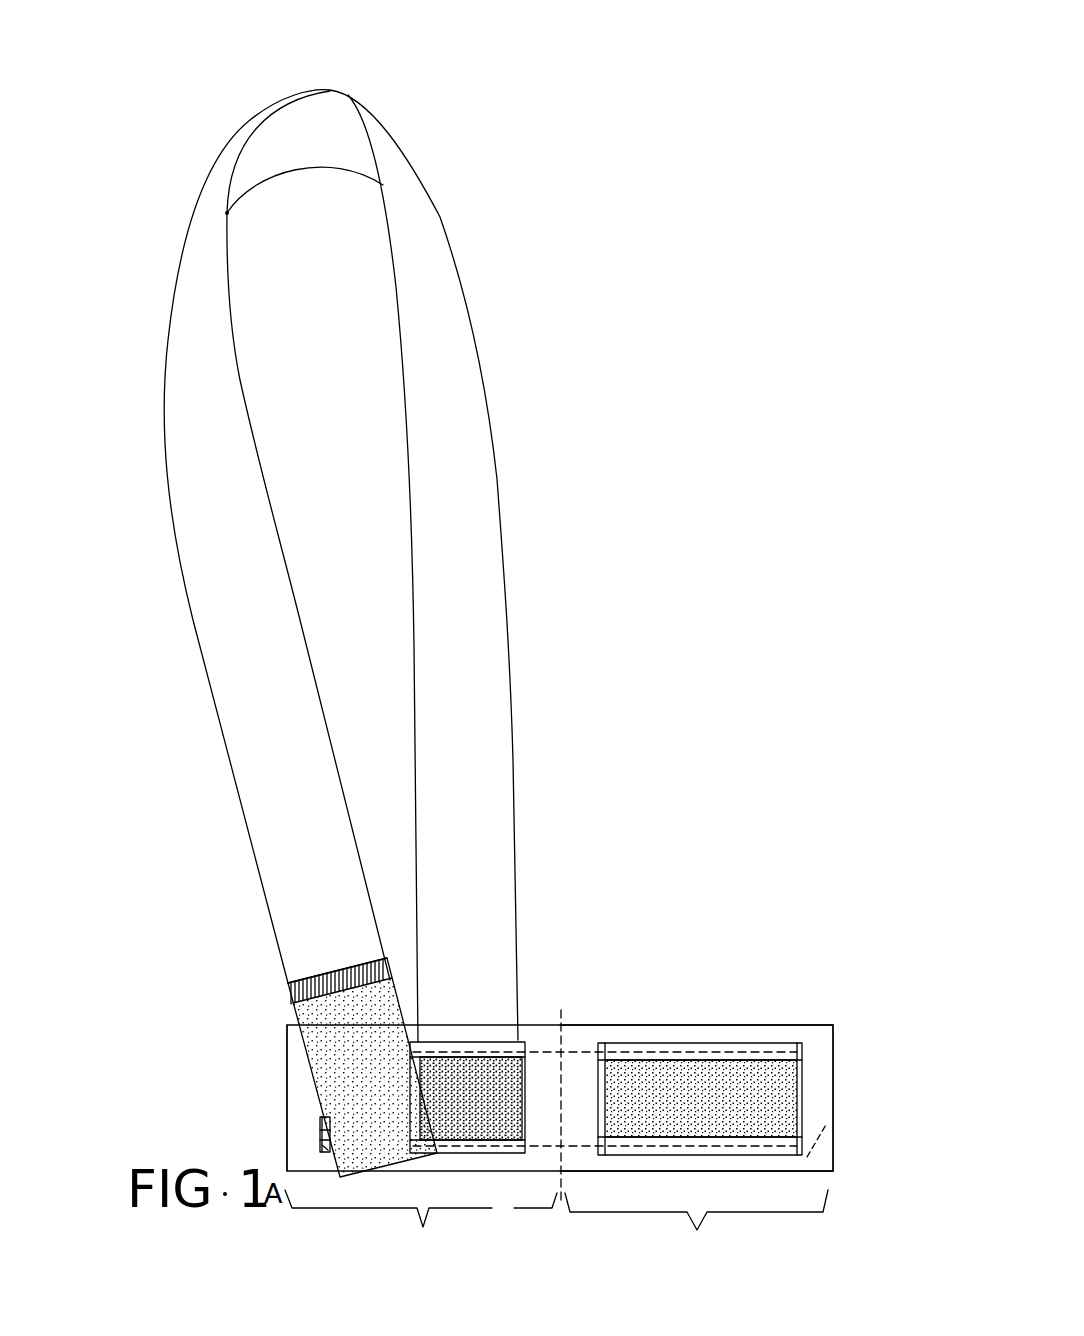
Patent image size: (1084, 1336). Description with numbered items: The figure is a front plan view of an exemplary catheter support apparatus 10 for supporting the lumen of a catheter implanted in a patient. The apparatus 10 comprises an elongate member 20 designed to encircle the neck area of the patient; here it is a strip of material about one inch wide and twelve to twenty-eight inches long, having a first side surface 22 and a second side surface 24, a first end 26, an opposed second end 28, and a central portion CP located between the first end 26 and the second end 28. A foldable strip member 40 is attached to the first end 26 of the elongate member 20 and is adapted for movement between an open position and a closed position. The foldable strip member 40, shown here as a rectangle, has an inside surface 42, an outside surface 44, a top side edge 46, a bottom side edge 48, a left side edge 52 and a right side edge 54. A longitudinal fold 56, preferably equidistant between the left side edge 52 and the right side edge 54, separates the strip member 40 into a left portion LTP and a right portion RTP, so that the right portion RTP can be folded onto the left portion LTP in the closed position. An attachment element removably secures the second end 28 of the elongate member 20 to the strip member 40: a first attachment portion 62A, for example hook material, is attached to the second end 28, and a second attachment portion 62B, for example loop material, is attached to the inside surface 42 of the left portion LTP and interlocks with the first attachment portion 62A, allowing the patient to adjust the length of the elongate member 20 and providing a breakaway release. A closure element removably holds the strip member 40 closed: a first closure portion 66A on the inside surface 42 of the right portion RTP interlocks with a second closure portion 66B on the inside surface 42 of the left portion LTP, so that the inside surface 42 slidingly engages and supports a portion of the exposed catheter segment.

The catheter support apparatus 10 is at (615, 342).
The elongate member 20 is at (349, 521).
The first side surface 22 is at (236, 630).
The second side surface 24 is at (282, 137).
The central portion CP is at (342, 90).
The first end 26 is at (470, 1017).
The second end 28 is at (312, 962).
The first attachment portion 62A is at (337, 1037).
The foldable strip member 40 is at (837, 1003).
The inside surface 42 is at (300, 1082).
The top side edge 46 is at (687, 1025).
The right side edge 54 is at (833, 1055).
The outside surface 44 is at (833, 1157).
The left side edge 52 is at (287, 1126).
The second attachment portion 62B is at (323, 1148).
The second closure portion 66B is at (495, 1075).
The first closure portion 66A is at (700, 1077).
The longitudinal fold 56 is at (562, 1040).
The bottom side edge 48 is at (500, 1173).
The left portion LTP is at (421, 1228).
The right portion RTP is at (696, 1227).